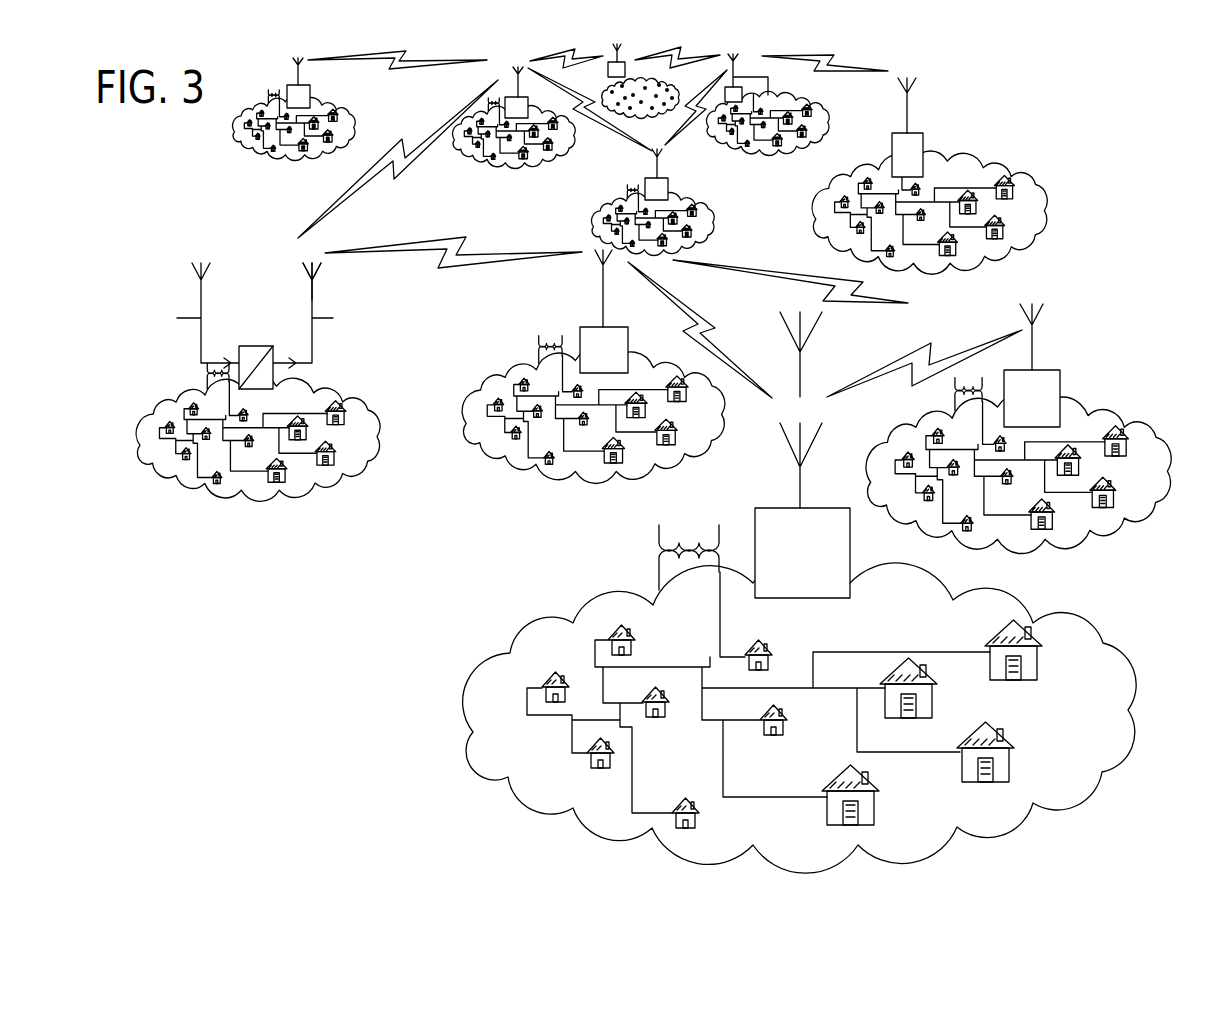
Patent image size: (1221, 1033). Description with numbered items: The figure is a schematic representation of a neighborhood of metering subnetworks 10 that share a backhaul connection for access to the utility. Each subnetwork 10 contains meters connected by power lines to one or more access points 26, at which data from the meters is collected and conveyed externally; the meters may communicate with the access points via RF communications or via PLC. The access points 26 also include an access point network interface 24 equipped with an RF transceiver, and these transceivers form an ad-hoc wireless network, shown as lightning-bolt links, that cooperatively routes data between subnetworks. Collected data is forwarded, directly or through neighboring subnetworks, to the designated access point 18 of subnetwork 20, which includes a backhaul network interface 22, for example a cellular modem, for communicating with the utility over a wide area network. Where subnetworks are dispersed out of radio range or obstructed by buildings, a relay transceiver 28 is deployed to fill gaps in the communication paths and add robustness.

The metering subnetwork 10 is at (1117, 668).
The designated access point 18 is at (241, 312).
The subnetwork 20 is at (233, 512).
The backhaul network interface (BNI) 22 is at (198, 343).
The access point network interface (ANI) 24 is at (313, 298).
The access point 26 is at (923, 145).
The relay transceiver 28 is at (813, 330).